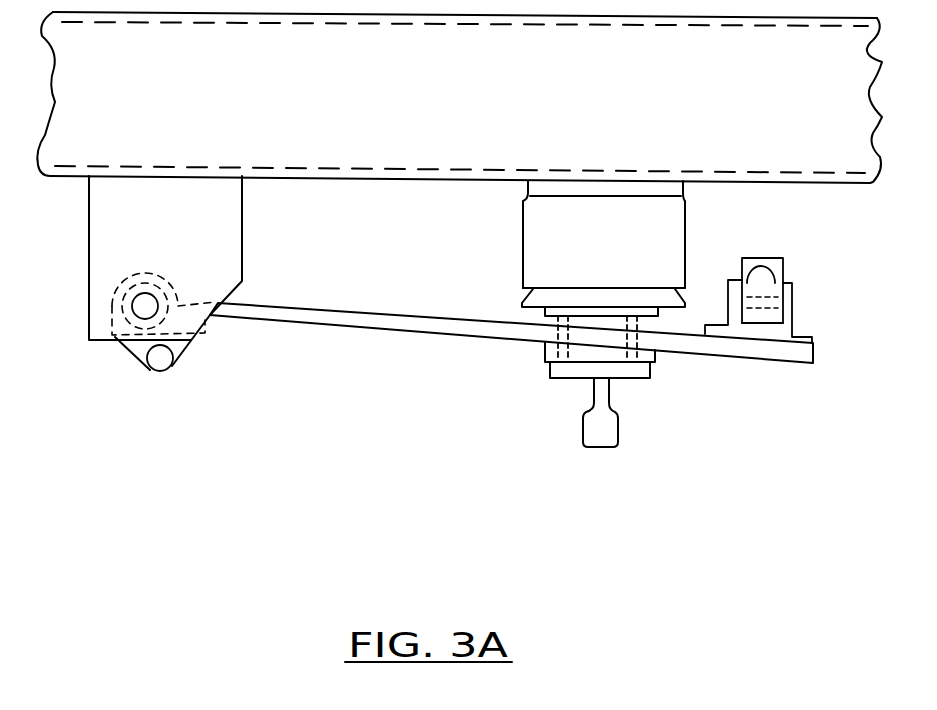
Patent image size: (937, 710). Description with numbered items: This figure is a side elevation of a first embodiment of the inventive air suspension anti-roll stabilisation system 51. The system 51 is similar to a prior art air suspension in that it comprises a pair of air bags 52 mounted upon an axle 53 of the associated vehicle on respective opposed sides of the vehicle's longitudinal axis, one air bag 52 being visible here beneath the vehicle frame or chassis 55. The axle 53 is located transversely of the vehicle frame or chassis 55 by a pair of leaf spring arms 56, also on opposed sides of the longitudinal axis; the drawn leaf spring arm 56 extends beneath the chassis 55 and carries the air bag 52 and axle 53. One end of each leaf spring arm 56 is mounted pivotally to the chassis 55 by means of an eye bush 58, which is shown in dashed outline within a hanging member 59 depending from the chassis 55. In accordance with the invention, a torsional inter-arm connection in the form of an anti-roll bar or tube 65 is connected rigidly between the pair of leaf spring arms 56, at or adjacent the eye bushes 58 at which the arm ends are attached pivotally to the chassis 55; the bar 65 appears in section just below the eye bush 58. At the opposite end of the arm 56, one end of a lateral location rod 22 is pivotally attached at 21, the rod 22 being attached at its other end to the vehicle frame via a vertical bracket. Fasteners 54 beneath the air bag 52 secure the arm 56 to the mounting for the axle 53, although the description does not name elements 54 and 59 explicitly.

The vehicle frame or chassis 55 is at (442, 118).
The mounting bracket 59 is at (180, 250).
The eye bush 58 is at (108, 345).
The anti-roll bar or tube 65 is at (147, 370).
The leaf spring arm 56 is at (462, 325).
The air bag 52 is at (655, 262).
The bolts 54 is at (568, 357).
The axle 53 is at (605, 428).
The lateral location rod 22 is at (770, 275).
The pivotal attachment 21 is at (792, 315).
The inventive system 51 is at (353, 377).